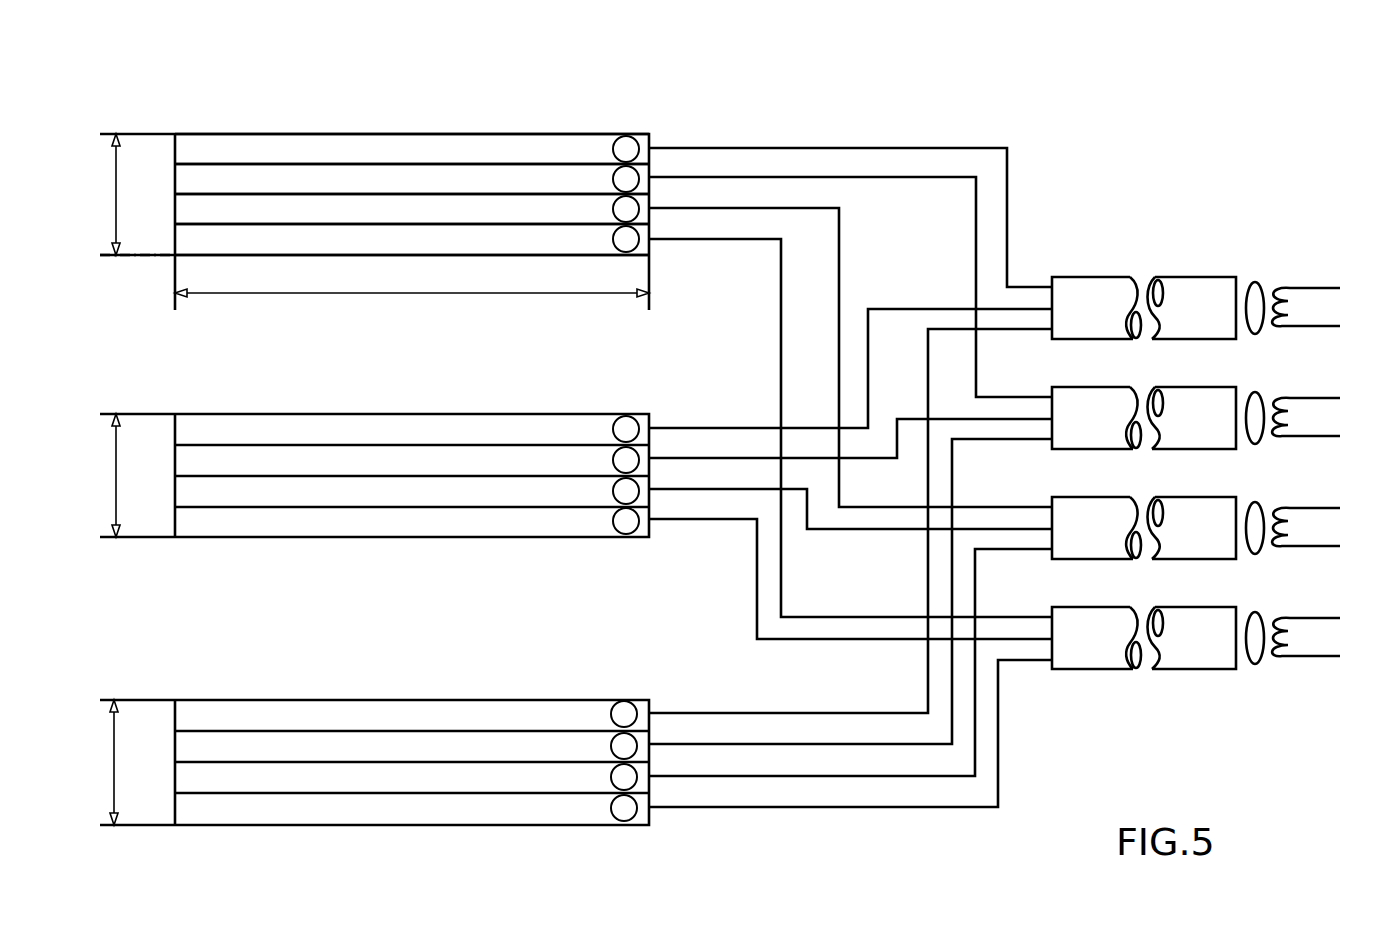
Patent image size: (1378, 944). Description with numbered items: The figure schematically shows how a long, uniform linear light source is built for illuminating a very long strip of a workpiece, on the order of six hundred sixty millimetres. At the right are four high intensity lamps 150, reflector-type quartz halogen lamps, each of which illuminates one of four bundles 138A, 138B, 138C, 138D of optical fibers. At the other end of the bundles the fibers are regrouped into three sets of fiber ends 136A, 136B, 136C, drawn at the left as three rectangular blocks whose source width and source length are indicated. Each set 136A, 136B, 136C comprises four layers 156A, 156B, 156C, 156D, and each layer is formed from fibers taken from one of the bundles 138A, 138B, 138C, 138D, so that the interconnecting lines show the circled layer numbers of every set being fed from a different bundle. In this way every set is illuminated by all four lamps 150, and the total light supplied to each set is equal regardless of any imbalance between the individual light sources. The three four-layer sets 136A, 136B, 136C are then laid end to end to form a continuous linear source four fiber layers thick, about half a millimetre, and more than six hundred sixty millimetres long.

The set of fiber ends 136A is at (467, 133).
The set of fiber ends 136B is at (467, 415).
The set of fiber ends 136C is at (465, 700).
The bundle of optical fibers 138A is at (1092, 278).
The bundle of optical fibers 138B is at (1092, 388).
The bundle of optical fibers 138C is at (1092, 498).
The bundle of optical fibers 138D is at (1092, 608).
The high intensity lamp 150 is at (1318, 286).
The fiber layer 156A is at (362, 151).
The fiber layer 156B is at (307, 181).
The fiber layer 156C is at (257, 212).
The fiber layer 156D is at (218, 242).